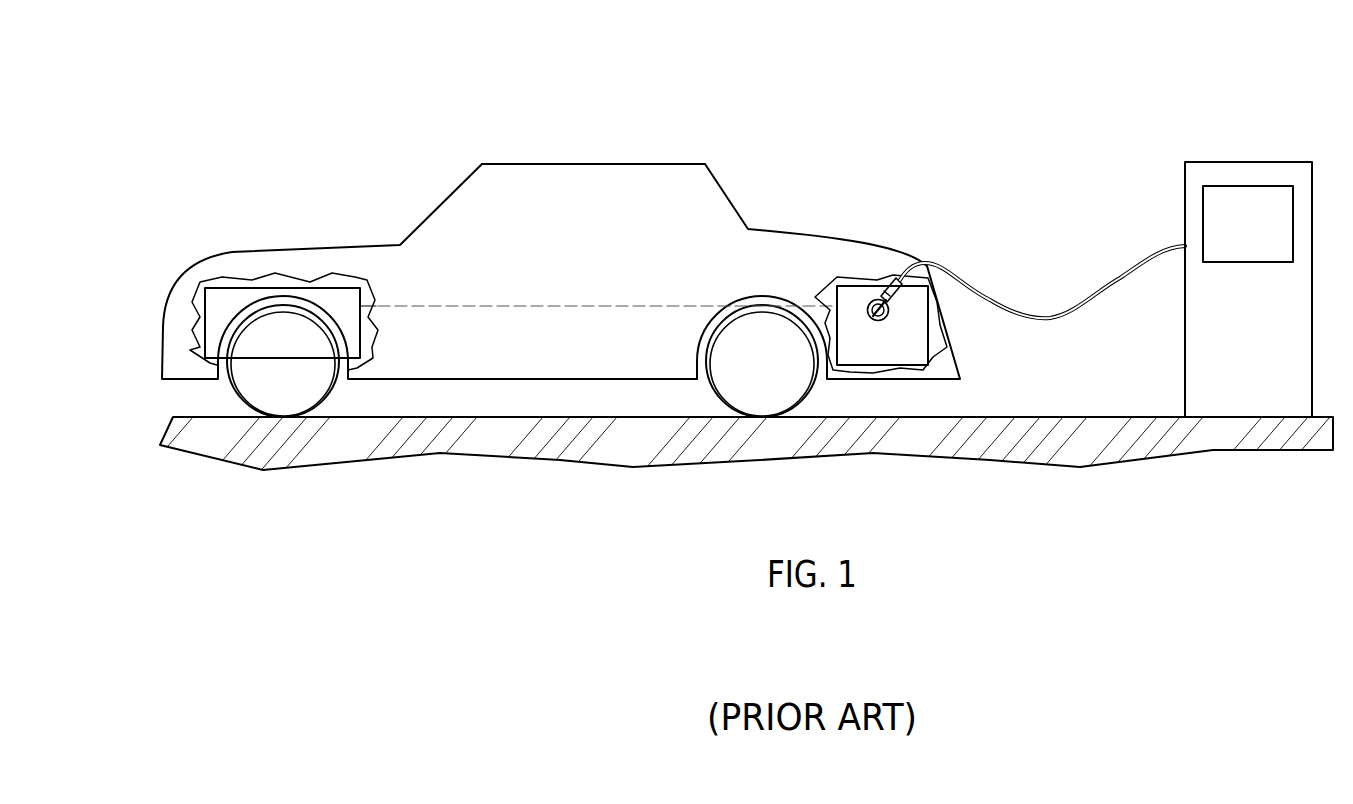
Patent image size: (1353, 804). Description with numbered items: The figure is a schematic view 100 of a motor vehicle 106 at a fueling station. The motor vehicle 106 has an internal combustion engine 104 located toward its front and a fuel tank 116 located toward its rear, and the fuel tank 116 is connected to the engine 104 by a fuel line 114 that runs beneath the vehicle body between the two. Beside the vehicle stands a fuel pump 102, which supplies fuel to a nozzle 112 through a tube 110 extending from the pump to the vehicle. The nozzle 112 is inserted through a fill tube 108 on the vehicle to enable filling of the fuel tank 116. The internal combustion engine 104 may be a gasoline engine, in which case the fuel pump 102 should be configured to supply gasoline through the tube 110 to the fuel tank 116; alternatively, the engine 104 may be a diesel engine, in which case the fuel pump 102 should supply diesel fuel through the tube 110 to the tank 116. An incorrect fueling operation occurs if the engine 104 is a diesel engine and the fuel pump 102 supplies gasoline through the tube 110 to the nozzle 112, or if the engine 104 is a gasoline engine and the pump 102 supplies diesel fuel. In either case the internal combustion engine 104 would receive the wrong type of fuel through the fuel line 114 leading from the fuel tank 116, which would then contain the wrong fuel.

The schematic view 100 is at (383, 117).
The fuel pump 102 is at (1250, 173).
The internal combustion engine 104 is at (233, 303).
The motor vehicle 106 is at (565, 182).
The fill tube 108 is at (865, 305).
The tube 110 is at (1043, 317).
The nozzle 112 is at (892, 278).
The fuel line 114 is at (585, 306).
The fuel tank 116 is at (900, 348).